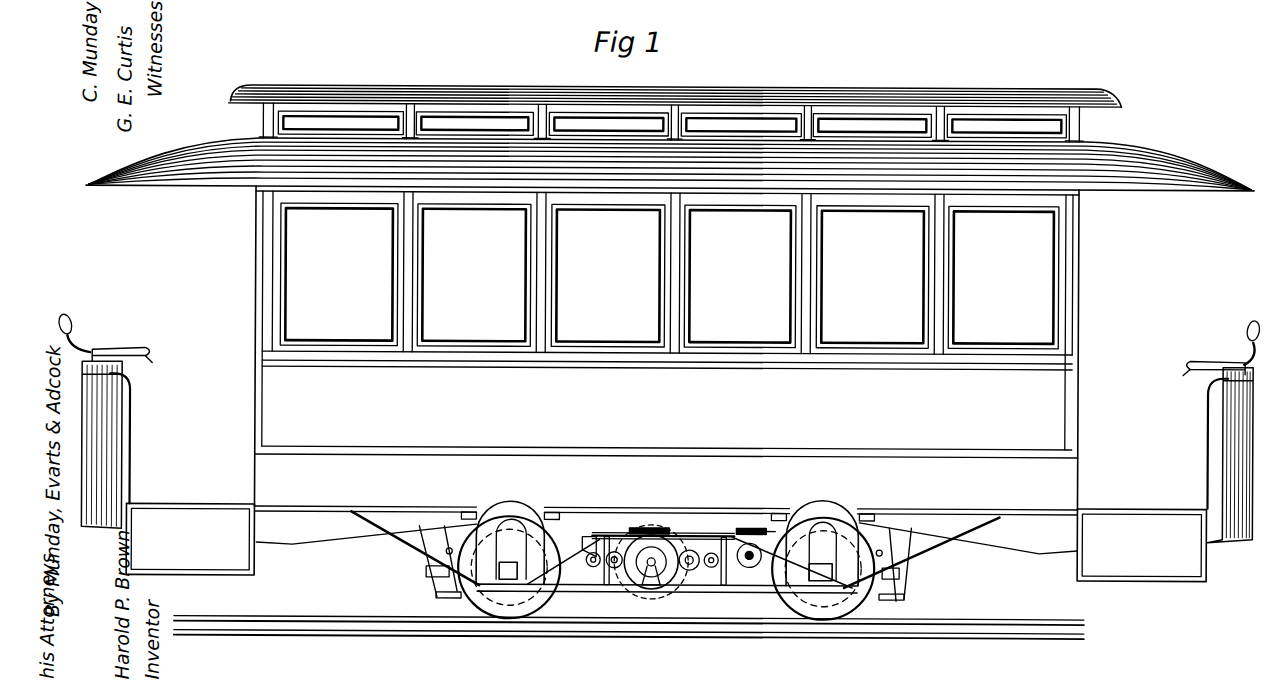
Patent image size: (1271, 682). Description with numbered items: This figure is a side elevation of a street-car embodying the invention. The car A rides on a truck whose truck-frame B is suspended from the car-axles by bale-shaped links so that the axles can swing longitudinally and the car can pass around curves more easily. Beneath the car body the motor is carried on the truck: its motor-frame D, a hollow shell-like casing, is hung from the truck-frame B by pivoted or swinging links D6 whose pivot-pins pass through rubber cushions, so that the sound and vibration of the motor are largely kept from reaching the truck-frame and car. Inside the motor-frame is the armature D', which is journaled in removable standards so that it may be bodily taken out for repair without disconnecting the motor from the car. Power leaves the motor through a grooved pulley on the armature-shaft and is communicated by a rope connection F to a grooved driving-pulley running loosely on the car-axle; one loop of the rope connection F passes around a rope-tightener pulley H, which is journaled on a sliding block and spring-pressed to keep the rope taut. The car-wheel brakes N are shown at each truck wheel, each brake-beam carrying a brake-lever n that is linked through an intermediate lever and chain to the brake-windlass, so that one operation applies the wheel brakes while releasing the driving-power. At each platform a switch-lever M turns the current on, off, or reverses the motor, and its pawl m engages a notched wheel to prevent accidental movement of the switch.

The car A is at (666, 348).
The truck-frame B is at (687, 535).
The motor-frame D is at (651, 593).
The armature D' is at (662, 506).
The pivoted links D6 is at (735, 572).
The rope connection F is at (582, 598).
The rope-tightener pulley H is at (747, 552).
The switch-lever M is at (122, 357).
The pawl m is at (148, 365).
The brakes N is at (443, 573).
The brake-lever n is at (428, 557).